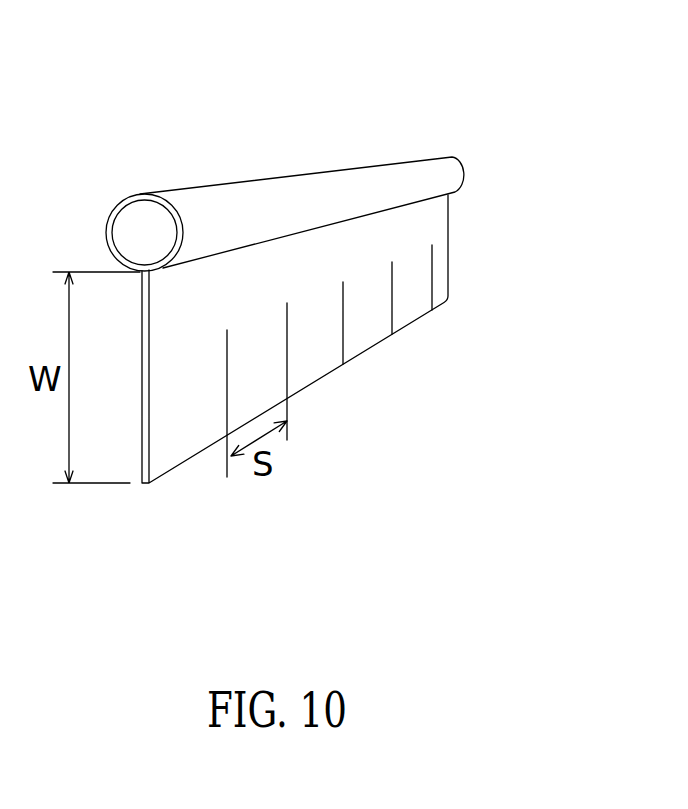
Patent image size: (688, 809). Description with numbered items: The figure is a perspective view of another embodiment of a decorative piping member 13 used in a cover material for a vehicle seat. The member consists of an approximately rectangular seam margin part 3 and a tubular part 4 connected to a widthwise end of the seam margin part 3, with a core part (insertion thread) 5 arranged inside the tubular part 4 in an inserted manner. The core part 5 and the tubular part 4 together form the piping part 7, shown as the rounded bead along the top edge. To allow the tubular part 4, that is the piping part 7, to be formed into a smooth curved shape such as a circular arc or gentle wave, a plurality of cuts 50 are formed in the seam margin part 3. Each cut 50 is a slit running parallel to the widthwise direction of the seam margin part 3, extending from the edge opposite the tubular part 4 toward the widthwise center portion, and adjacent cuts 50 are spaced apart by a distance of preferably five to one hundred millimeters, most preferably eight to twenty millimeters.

The decorative piping member 13 is at (432, 97).
The piping part 7 is at (72, 85).
The tubular part 4 is at (243, 196).
The core part (insertion thread) 5 is at (142, 230).
The seam margin part 3 is at (357, 322).
The cut (slit) 50 is at (512, 283).